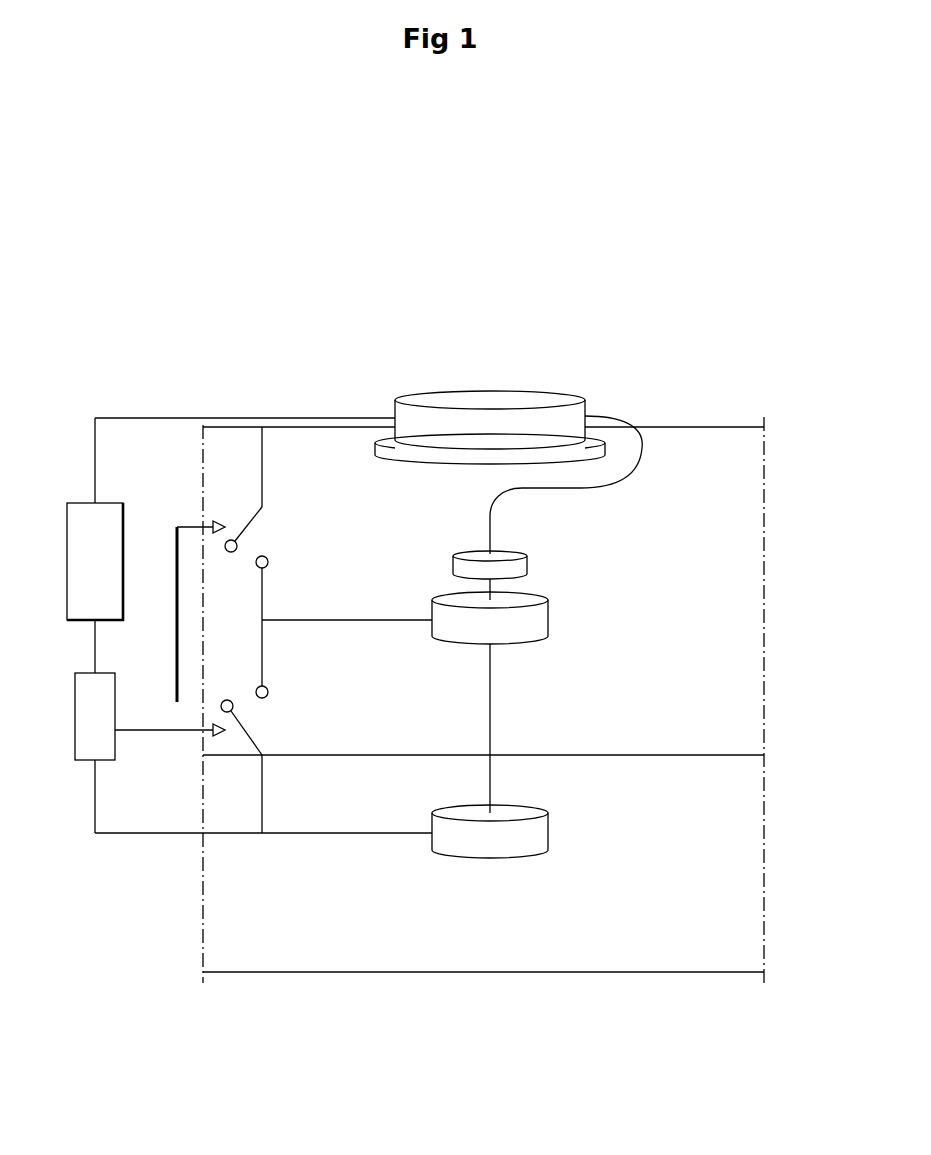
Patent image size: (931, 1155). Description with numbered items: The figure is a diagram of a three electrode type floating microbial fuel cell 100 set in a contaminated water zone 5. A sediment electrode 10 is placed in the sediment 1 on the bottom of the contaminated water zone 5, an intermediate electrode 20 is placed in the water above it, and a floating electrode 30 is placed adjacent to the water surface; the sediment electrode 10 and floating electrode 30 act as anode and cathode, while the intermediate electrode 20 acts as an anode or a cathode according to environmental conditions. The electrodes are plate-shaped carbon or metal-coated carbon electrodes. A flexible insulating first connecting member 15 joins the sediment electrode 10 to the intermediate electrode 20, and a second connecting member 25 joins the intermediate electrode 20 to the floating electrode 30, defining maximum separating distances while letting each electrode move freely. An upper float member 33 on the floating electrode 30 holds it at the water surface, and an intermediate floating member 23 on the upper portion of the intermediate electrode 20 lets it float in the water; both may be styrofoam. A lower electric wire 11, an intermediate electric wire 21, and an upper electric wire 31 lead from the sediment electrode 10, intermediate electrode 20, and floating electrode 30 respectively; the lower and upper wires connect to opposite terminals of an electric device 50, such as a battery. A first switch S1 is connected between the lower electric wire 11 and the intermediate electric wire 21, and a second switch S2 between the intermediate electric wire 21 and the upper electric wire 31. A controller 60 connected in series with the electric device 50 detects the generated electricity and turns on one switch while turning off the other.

The floating type microbial fuel cell 100 is at (405, 274).
The sediment 1 is at (735, 870).
The contaminated water zone 5 is at (736, 573).
The sediment electrode 10 is at (490, 858).
The lower electric wire 11 is at (355, 836).
The first connecting member 15 is at (492, 728).
The intermediate electrode 20 is at (549, 617).
The intermediate electric wire 21 is at (345, 622).
The intermediate floating member 23 is at (528, 562).
The second connecting member 25 is at (643, 460).
The floating electrode 30 is at (487, 400).
The upper electric wire 31 is at (325, 418).
The upper float member 33 is at (445, 462).
The electric device 50 is at (80, 622).
The controller 60 is at (83, 762).
The first switch S1 is at (290, 726).
The second switch S2 is at (290, 524).